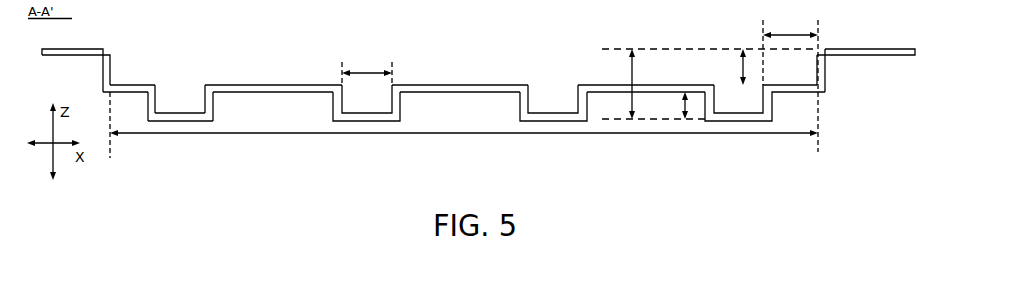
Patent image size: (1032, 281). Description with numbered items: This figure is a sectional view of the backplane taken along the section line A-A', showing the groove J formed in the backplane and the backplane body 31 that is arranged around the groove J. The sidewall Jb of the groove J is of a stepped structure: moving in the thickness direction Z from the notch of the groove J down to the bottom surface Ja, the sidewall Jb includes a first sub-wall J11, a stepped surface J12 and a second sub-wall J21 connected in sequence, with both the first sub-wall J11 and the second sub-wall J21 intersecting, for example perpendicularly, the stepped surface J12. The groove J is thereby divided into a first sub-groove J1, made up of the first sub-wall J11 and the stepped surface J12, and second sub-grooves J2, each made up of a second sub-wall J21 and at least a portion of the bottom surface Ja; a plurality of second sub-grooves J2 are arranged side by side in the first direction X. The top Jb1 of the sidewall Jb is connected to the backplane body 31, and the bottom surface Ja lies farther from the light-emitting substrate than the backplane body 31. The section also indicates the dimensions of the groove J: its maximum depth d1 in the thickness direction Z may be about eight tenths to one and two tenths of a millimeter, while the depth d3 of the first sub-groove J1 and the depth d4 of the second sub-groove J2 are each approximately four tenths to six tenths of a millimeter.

The first sub-wall J11 is at (110, 72).
The stepped surface J12 is at (137, 85).
The second sub-wall J21 is at (157, 102).
The first sub-groove J1 is at (792, 34).
The second sub-groove J2 is at (372, 73).
The bottom surface Ja is at (191, 121).
The groove J is at (462, 134).
The sidewall Jb is at (890, 146).
The top of the sidewall Jb1 is at (823, 46).
The backplane body 31 is at (868, 49).
The maximum depth d1 is at (631, 79).
The depth of the first sub-groove d3 is at (741, 67).
The depth of the second sub-groove d4 is at (684, 104).